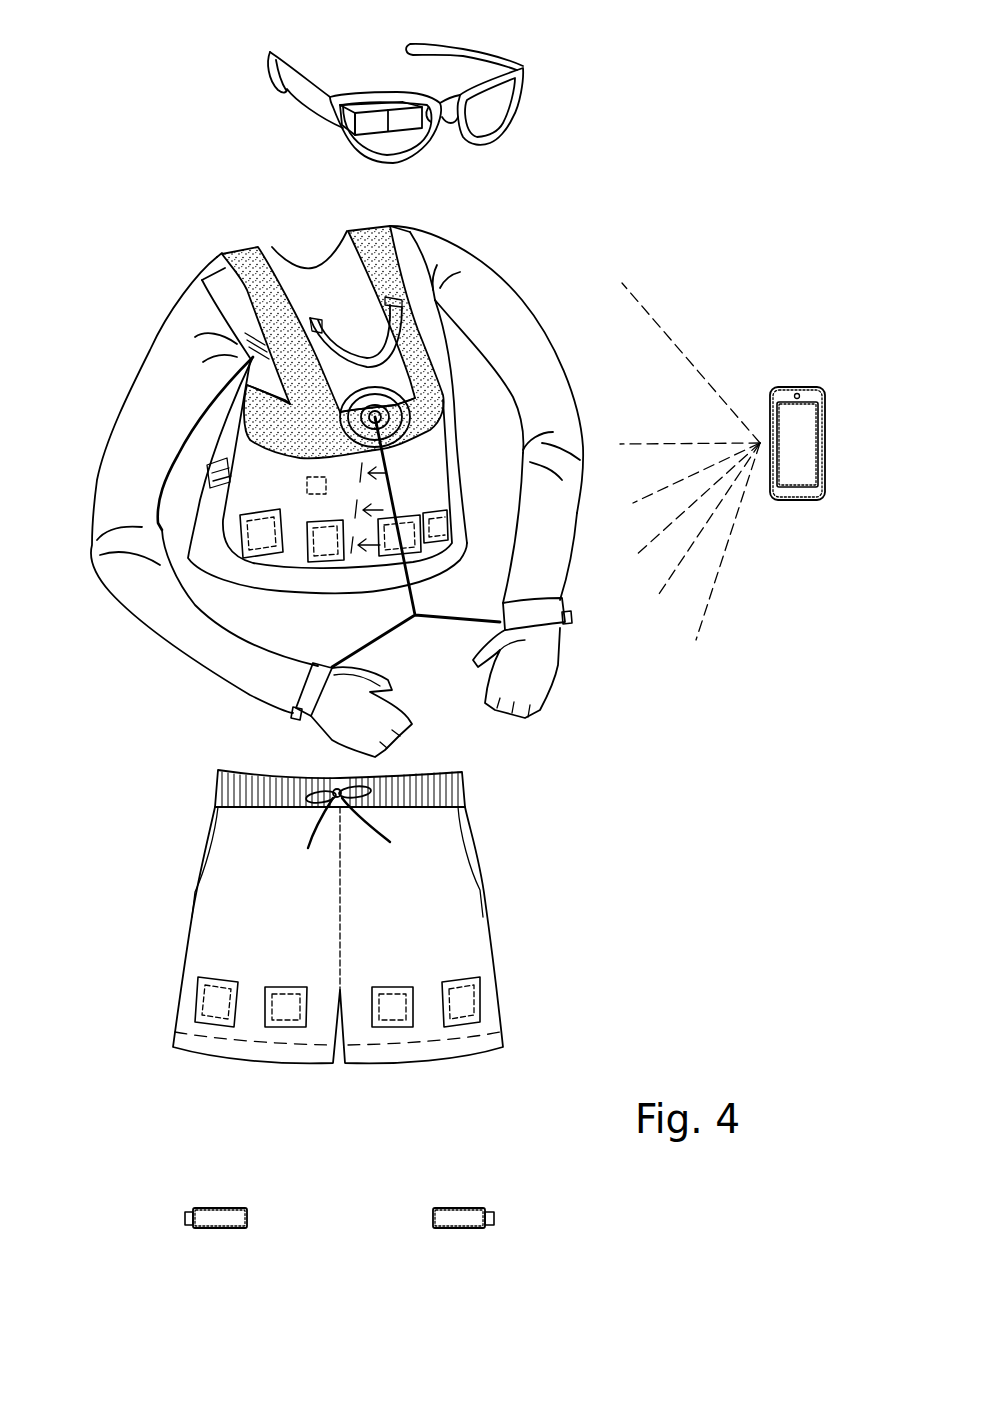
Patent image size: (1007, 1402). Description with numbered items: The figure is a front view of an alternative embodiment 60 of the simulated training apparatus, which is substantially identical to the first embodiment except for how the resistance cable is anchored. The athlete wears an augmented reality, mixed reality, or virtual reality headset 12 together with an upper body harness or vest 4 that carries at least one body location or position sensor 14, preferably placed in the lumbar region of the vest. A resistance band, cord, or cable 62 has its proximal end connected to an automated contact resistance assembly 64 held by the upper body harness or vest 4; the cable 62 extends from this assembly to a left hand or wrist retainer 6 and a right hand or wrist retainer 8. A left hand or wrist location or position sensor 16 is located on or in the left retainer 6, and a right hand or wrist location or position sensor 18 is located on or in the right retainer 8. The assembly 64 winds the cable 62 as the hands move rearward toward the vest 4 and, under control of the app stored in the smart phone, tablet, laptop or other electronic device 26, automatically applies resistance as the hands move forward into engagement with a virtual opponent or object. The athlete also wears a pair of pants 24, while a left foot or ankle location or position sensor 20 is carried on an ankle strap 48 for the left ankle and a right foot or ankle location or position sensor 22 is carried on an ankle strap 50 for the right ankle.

The alternative embodiment of the simulated training apparatus 60 is at (114, 189).
The augmented reality, mixed reality, or virtual reality headset 12 is at (523, 79).
The upper body harness or vest 4 is at (235, 247).
The body location or position sensor 14 is at (307, 486).
The automated contact resistance assembly 64 is at (385, 425).
The resistance band, cord, or cable 62 is at (410, 604).
The left hand or wrist retainer 6 is at (568, 625).
The left hand or wrist location or position sensor 16 is at (572, 618).
The right hand or wrist retainer 8 is at (290, 692).
The right hand or wrist location or position sensor 18 is at (294, 716).
The smart phone, tablet, laptop or other portable or non-portable electronic device 26 is at (798, 386).
The pair of pants 24 is at (193, 915).
The right foot or ankle location or position sensor 22 is at (188, 1210).
The ankle strap 50 is at (230, 1206).
The ankle strap 48 is at (448, 1206).
The left foot or ankle location or position sensor 20 is at (490, 1210).